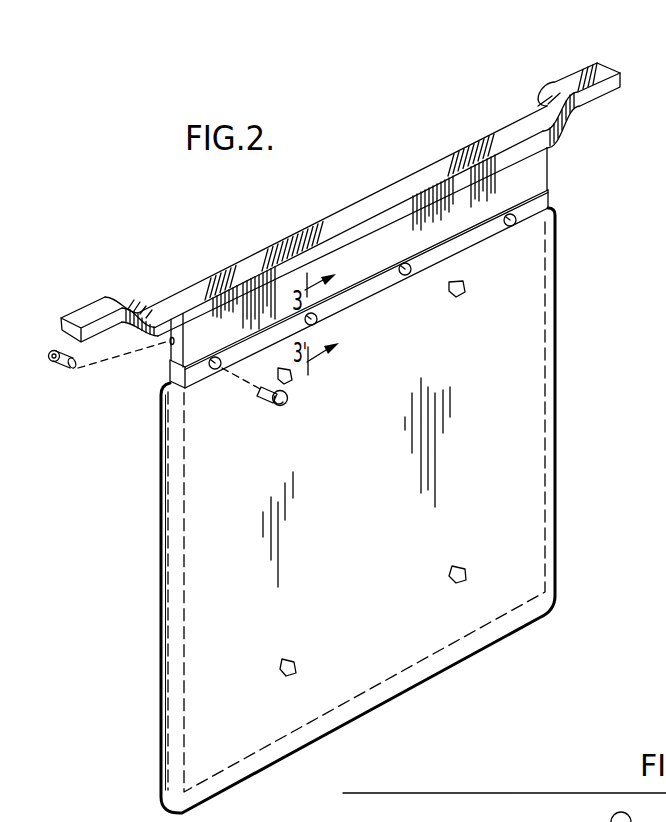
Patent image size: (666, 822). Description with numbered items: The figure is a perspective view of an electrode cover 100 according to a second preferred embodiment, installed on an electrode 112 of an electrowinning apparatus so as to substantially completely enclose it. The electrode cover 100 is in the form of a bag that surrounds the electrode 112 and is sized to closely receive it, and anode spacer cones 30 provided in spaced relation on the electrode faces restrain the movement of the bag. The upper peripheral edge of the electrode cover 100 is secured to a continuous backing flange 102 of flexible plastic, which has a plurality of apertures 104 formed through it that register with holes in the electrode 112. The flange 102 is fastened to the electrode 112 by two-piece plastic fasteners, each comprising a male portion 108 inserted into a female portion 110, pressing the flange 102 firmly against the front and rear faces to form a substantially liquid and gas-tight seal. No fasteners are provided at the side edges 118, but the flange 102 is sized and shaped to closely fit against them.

The anode spacer cone 30 is at (290, 380).
The electrode cover 100 is at (556, 343).
The backing flange 102 is at (550, 203).
The aperture 104 is at (222, 350).
The male portion 108 is at (48, 365).
The female portion 110 is at (515, 227).
The electrode 112 is at (548, 163).
The side edge 118 is at (172, 336).